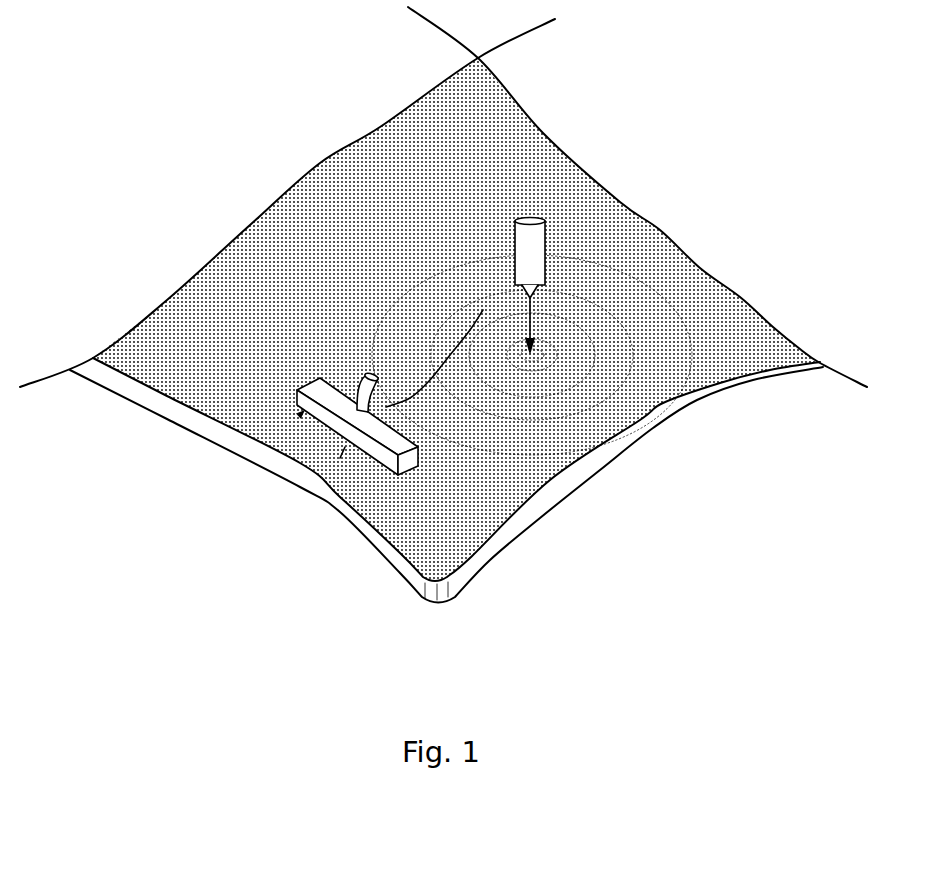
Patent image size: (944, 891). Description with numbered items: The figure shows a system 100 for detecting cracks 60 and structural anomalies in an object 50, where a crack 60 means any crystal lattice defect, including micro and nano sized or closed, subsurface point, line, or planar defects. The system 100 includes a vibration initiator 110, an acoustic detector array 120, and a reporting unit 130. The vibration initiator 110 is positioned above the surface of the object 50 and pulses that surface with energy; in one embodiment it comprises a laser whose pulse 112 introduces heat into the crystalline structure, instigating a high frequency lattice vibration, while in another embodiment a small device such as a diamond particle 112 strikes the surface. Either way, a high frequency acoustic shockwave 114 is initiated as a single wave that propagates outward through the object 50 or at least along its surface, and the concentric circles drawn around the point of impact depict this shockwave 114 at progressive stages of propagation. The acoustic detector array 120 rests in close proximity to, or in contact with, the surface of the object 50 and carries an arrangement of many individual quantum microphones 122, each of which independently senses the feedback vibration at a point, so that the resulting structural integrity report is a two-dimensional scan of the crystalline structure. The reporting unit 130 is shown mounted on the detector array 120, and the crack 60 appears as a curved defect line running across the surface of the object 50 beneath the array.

The system 100 is at (147, 82).
The object 50 is at (441, 168).
The vibration initiator 110 is at (538, 236).
The pulse 112 is at (532, 313).
The acoustic shockwave 114 is at (690, 370).
The acoustic detector array 120 is at (340, 416).
The quantum microphone 122 is at (298, 418).
The reporting unit 130 is at (364, 374).
The crack 60 is at (415, 385).